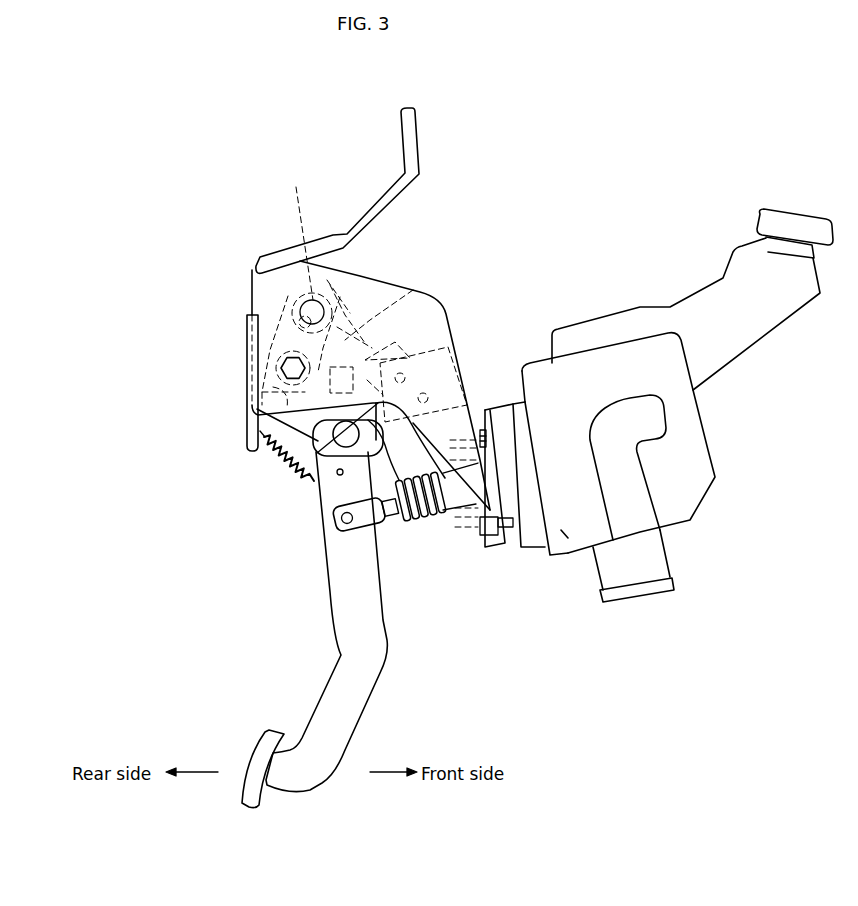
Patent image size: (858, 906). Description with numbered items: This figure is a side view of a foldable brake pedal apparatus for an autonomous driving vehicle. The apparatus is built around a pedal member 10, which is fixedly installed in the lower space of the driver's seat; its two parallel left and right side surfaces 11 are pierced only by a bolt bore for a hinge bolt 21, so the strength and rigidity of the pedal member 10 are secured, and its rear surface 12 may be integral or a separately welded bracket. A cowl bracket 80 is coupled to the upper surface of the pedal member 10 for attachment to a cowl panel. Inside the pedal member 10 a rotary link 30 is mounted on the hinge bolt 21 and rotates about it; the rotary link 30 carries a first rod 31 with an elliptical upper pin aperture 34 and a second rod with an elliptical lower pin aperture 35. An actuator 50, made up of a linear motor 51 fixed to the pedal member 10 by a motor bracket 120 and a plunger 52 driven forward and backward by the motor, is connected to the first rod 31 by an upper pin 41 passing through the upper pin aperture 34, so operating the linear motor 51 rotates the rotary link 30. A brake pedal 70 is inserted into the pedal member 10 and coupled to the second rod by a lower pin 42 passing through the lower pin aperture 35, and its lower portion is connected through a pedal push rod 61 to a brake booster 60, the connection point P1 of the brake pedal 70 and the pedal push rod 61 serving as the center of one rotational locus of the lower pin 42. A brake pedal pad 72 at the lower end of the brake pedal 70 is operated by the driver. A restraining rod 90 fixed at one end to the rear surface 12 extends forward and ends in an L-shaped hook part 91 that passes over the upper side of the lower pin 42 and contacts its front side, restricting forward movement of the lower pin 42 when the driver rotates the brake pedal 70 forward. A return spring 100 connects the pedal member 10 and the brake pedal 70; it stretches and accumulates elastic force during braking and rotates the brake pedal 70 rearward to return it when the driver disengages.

The pedal member 10 is at (360, 270).
The side surfaces 11 is at (362, 290).
The rear surface 12 is at (250, 419).
The hinge bolt 21 is at (290, 364).
The rotary link 30 is at (278, 316).
The first rod 31 is at (300, 288).
The upper pin aperture 34 is at (303, 320).
The lower pin aperture 35 is at (265, 437).
The upper pin 41 is at (300, 232).
The lower pin 42 is at (332, 421).
The actuator 50 is at (518, 270).
The linear motor 51 is at (410, 340).
The plunger 52 is at (413, 290).
The brake booster 60 is at (702, 460).
The pedal push rod 61 is at (397, 512).
The brake pedal 70 is at (350, 623).
The brake pedal pad 72 is at (265, 743).
The cowl bracket 80 is at (390, 184).
The restraining rod 90 is at (300, 397).
The hook part 91 is at (410, 520).
The return spring 100 is at (288, 458).
The motor bracket 120 is at (447, 360).
The connection point P1 is at (340, 522).